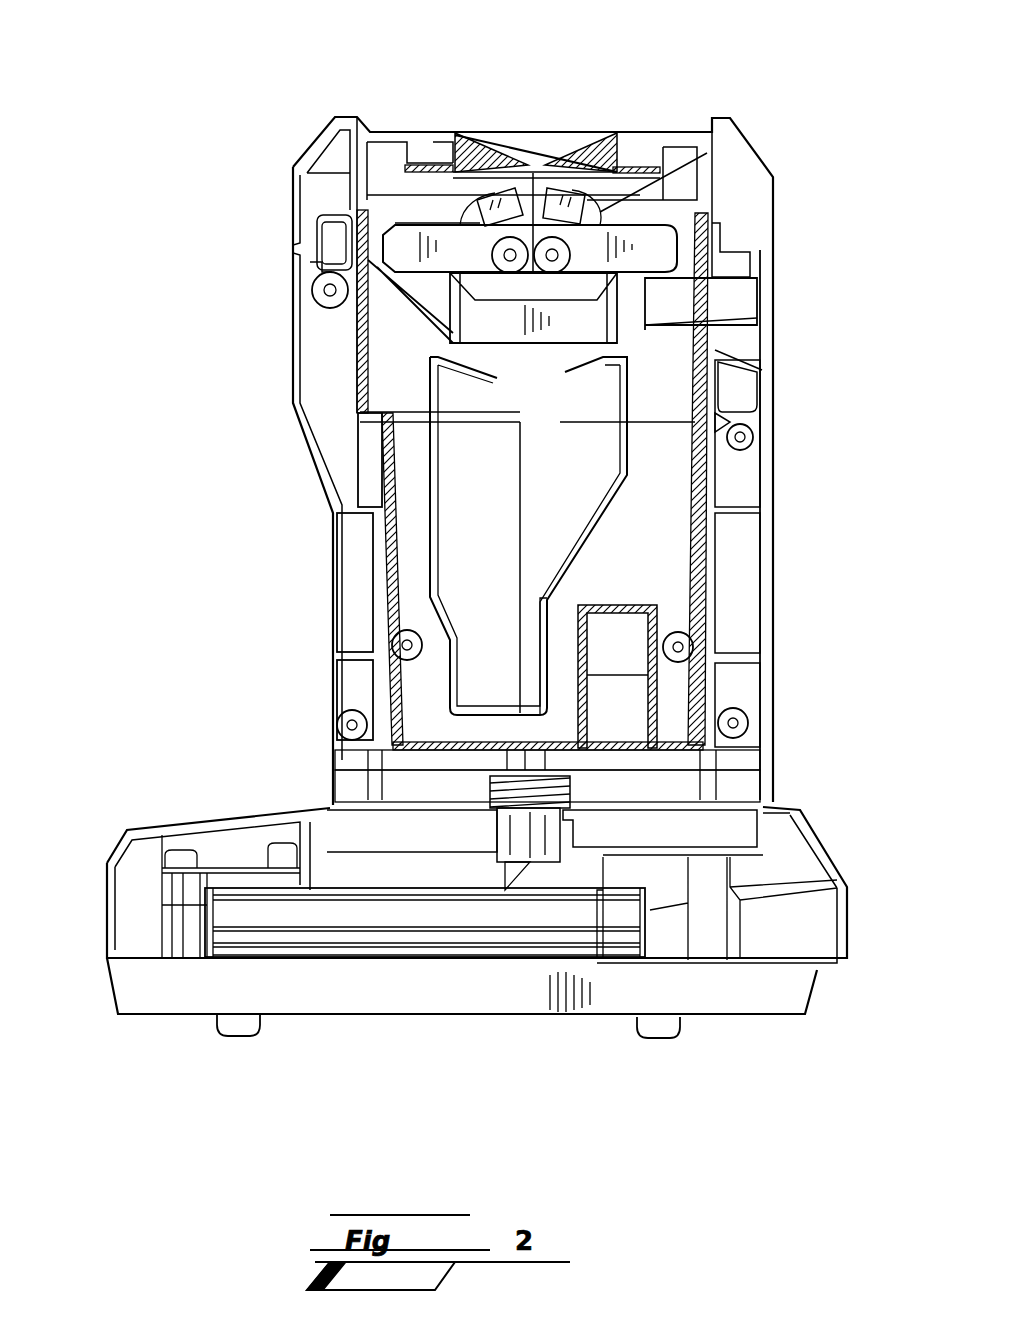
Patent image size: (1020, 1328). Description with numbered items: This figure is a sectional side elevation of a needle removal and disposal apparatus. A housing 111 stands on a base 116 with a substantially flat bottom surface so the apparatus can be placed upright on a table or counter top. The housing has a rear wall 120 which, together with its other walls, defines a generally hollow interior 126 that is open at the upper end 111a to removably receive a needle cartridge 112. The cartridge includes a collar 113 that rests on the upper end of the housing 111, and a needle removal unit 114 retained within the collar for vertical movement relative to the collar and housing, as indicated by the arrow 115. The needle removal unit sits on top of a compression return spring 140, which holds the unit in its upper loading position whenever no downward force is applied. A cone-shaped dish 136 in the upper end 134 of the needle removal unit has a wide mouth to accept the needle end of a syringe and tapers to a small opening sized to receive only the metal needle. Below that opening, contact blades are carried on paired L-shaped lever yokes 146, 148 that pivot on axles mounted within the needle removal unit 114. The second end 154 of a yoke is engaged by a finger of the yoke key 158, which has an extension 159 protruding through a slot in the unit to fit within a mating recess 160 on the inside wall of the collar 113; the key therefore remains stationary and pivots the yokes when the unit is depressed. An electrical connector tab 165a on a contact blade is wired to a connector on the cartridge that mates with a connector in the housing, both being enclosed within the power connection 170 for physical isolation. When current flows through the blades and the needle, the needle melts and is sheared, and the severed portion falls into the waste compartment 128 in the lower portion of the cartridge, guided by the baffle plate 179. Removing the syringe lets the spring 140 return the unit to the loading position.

The housing 111 is at (262, 388).
The open upper end 111a is at (333, 207).
The needle cartridge 112 is at (380, 85).
The collar 113 is at (740, 146).
The needle removal unit 114 is at (453, 118).
The arrow 115 is at (538, 100).
The base 116 is at (107, 907).
The rear wall 120 is at (773, 483).
The hollow interior 126 is at (377, 457).
The waste compartment 128 is at (460, 595).
The upper end 134 is at (678, 108).
The dish 136 is at (577, 150).
The compression return spring 140 is at (492, 788).
The yoke 146 is at (745, 262).
The yoke 148 is at (392, 272).
The second end 154 is at (688, 228).
The yoke key 158 is at (500, 343).
The extension 159 is at (757, 300).
The mating recess 160 is at (737, 303).
The electrical connector tab 165a is at (600, 212).
The power connection 170 is at (648, 725).
The baffle plate 179 is at (593, 507).